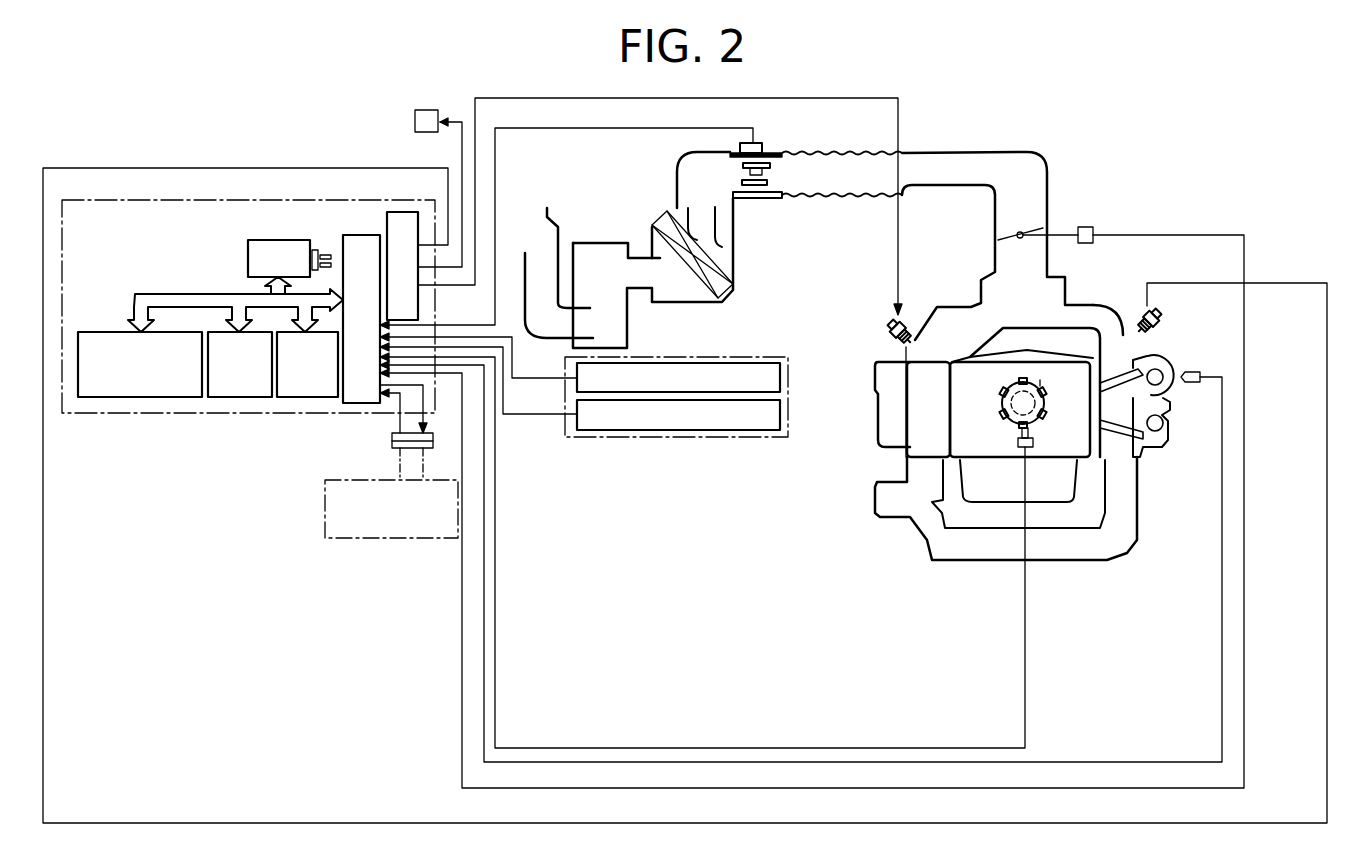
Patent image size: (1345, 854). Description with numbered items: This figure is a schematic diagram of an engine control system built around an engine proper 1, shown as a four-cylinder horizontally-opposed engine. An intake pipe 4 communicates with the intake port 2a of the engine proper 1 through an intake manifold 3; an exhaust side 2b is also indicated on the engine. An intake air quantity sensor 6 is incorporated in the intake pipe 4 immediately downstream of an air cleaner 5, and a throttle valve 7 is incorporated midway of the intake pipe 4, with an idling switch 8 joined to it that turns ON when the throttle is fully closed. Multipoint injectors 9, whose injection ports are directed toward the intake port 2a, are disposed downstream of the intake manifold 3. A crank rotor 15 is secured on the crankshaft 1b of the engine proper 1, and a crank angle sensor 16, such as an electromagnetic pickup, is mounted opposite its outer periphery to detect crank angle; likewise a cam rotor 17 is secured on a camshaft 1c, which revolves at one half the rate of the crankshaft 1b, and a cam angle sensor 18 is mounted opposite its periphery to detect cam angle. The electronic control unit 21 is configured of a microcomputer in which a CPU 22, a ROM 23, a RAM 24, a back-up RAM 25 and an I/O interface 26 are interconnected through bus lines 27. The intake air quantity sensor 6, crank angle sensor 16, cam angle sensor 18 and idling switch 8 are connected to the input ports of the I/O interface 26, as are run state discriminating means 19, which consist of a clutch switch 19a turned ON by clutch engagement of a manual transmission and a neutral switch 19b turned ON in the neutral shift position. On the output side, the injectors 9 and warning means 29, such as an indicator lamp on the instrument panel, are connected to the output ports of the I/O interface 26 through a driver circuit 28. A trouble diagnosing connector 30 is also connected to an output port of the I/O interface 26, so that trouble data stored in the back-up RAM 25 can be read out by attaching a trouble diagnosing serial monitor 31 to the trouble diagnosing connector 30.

The engine proper 1 is at (873, 416).
The crankshaft 1b is at (1002, 396).
The camshaft 1c is at (1165, 398).
The intake port 2a is at (1110, 367).
The exhaust valve 2b is at (1110, 443).
The intake manifold 3 is at (1100, 305).
The intake pipe 4 is at (973, 160).
The air cleaner 5 is at (730, 297).
The intake air quantity sensor 6 is at (765, 143).
The throttle valve 7 is at (1020, 240).
The idling switch 8 is at (1086, 227).
The injectors 9 is at (890, 339).
The crank rotor 15 is at (1042, 375).
The crank angle sensor 16 is at (1018, 441).
The cam rotor 17 is at (1170, 355).
The cam angle sensor 18 is at (1200, 373).
The run state discriminating means 19 is at (701, 405).
The clutch switch 19a is at (781, 378).
The neutral switch 19b is at (781, 420).
The electronic control unit 21 is at (270, 413).
The CPU 22 is at (260, 240).
The ROM 23 is at (226, 397).
The RAM 24 is at (306, 397).
The back-up RAM 25 is at (128, 398).
The I/O interface 26 is at (352, 235).
The bus lines 27 is at (214, 294).
The driver circuit 28 is at (401, 212).
The warning means 29 is at (415, 121).
The trouble diagnosing connector 30 is at (392, 440).
The trouble diagnosing serial monitor 31 is at (420, 538).